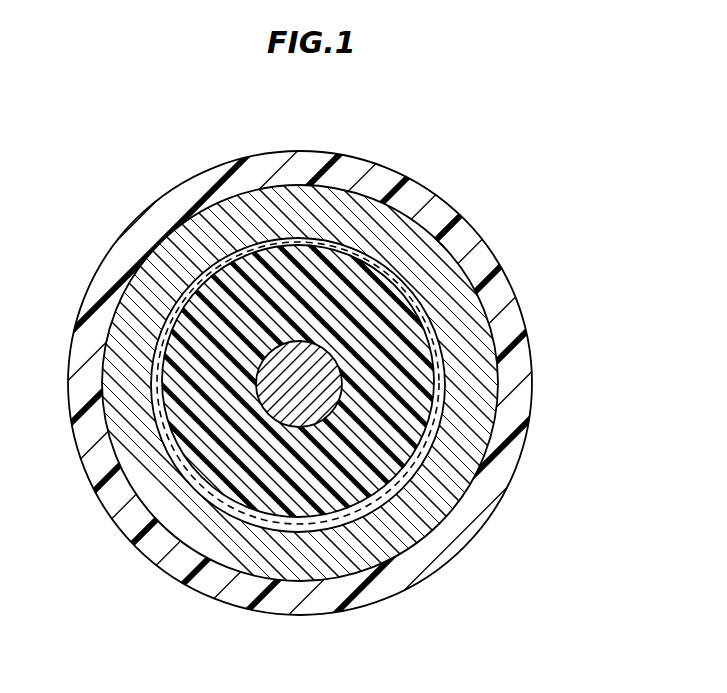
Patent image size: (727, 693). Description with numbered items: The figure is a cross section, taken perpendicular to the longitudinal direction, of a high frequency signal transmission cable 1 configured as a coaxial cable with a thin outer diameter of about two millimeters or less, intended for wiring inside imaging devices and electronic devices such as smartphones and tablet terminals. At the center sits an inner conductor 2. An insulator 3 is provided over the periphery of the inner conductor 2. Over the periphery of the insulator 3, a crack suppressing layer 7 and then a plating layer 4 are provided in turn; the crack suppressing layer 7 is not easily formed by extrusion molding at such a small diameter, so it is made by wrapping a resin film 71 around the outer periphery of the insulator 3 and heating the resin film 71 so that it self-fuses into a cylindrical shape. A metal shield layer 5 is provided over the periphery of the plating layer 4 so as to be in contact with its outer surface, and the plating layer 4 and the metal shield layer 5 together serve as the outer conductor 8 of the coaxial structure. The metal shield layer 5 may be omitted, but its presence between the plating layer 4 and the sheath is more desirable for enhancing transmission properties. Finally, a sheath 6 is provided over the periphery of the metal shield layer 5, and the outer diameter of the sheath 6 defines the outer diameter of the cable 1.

The high frequency signal transmission cable 1 is at (157, 148).
The inner conductor 2 is at (335, 351).
The insulator 3 is at (407, 380).
The plating layer 4 is at (448, 447).
The metal shield layer 5 is at (448, 482).
The sheath 6 is at (417, 560).
The crack suppressing layer 7 is at (441, 420).
The resin film 71 is at (438, 407).
The outer conductor 8 is at (363, 346).